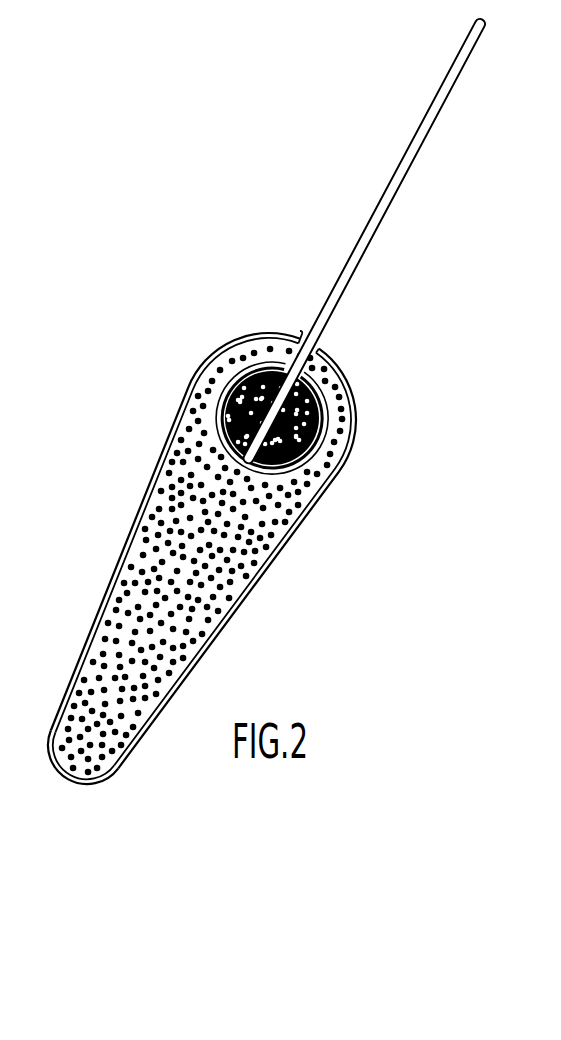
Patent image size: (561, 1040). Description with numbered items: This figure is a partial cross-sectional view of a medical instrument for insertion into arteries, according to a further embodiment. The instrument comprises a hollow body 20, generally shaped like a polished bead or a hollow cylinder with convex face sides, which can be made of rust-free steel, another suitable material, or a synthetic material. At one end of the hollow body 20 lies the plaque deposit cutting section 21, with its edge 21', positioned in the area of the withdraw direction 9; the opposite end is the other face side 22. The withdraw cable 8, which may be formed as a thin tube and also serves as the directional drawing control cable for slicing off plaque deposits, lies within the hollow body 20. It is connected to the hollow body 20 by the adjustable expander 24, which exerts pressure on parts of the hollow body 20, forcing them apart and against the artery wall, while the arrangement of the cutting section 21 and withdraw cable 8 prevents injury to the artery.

The withdraw cable 8 is at (408, 167).
The withdraw direction 9 is at (327, 202).
The hollow body 20 is at (145, 352).
The plaque deposit cutting section 21 is at (298, 292).
The edge of opening 21' is at (257, 301).
The face side 22 is at (59, 808).
The adjustable expander 24 is at (328, 424).